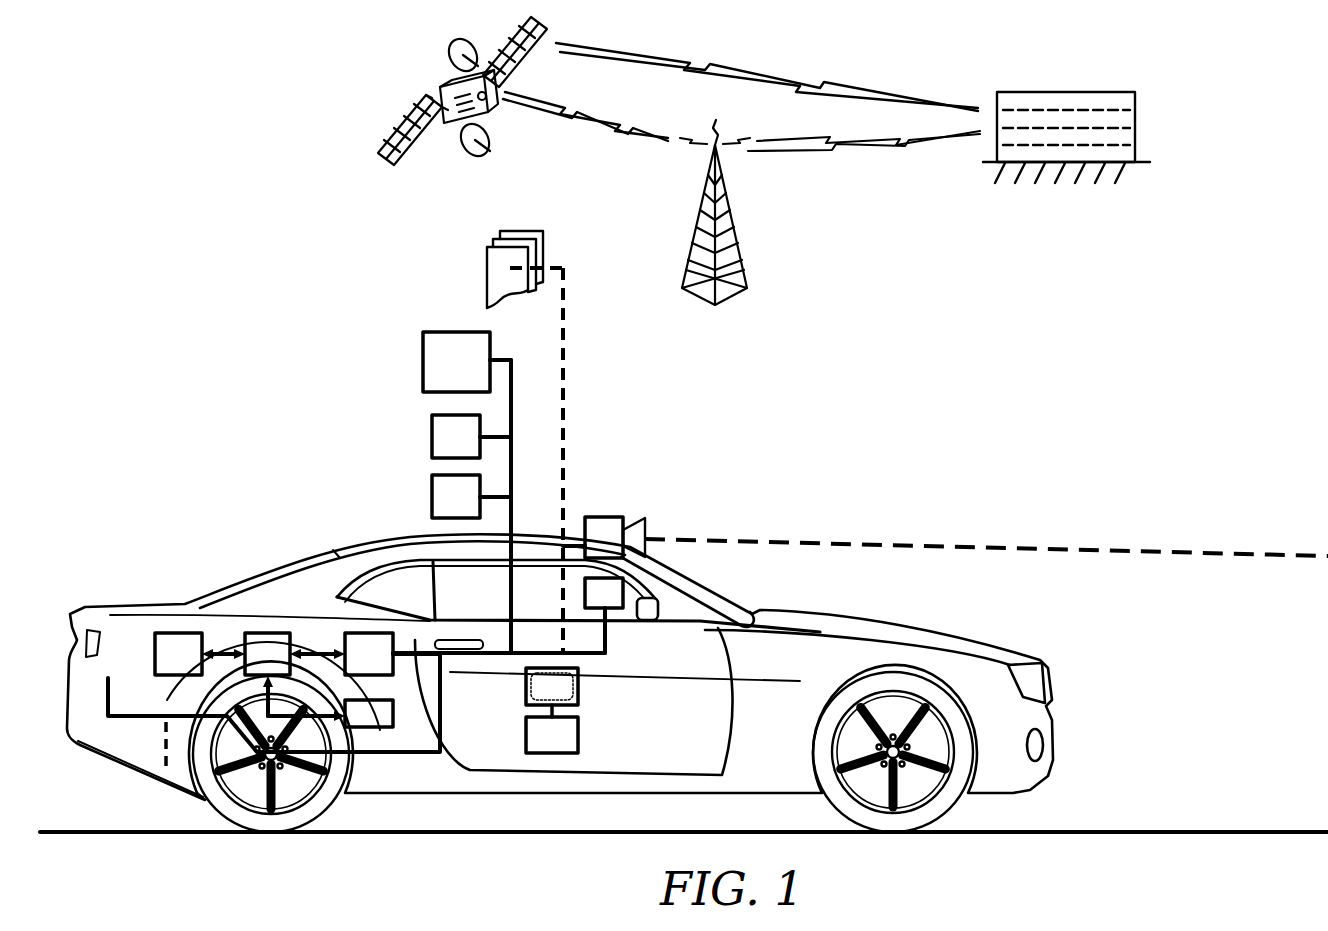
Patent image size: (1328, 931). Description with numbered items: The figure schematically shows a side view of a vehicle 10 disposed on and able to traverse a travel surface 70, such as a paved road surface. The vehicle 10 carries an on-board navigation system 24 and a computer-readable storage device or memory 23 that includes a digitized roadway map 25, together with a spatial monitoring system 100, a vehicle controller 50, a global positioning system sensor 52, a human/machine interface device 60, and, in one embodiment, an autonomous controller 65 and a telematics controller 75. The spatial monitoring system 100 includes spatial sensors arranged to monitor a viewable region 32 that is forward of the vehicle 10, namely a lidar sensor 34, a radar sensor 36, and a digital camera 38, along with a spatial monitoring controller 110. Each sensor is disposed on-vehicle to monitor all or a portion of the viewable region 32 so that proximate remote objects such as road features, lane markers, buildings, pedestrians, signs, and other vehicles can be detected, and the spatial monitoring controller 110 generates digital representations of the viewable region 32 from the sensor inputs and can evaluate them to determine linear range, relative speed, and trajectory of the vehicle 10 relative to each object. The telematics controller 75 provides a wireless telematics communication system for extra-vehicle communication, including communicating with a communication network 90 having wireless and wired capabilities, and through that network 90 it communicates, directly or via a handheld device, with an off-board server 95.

The vehicle 10 is at (947, 604).
The computer-readable storage device or media (memory) 23 is at (487, 270).
The on-board navigation system 24 is at (627, 597).
The digitized roadway map 25 is at (690, 580).
The viewable region 32 is at (770, 538).
The lidar sensor 34 is at (470, 374).
The radar sensor 36 is at (470, 451).
The digital camera 38 is at (470, 511).
The vehicle controller 50 is at (268, 633).
The global positioning system (GPS) sensor 52 is at (526, 735).
The human/machine interface (HMI) device 60 is at (526, 693).
The autonomous controller 65 is at (371, 727).
The travel surface 70 is at (1128, 832).
The telematics controller 75 is at (177, 633).
The communication network 90 is at (580, 192).
The off-board server 95 is at (1150, 109).
The spatial monitoring system 100 is at (626, 505).
The spatial monitoring controller 110 is at (368, 633).